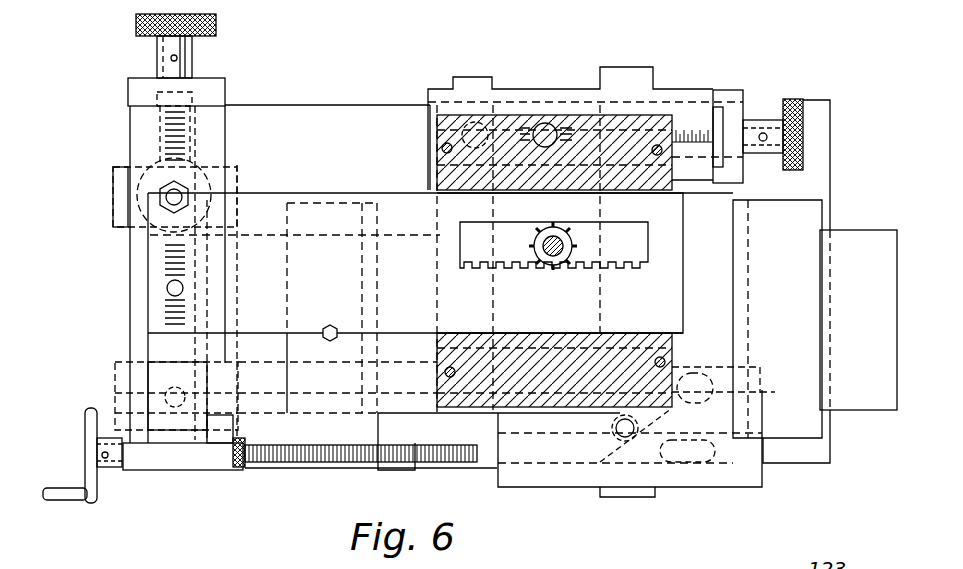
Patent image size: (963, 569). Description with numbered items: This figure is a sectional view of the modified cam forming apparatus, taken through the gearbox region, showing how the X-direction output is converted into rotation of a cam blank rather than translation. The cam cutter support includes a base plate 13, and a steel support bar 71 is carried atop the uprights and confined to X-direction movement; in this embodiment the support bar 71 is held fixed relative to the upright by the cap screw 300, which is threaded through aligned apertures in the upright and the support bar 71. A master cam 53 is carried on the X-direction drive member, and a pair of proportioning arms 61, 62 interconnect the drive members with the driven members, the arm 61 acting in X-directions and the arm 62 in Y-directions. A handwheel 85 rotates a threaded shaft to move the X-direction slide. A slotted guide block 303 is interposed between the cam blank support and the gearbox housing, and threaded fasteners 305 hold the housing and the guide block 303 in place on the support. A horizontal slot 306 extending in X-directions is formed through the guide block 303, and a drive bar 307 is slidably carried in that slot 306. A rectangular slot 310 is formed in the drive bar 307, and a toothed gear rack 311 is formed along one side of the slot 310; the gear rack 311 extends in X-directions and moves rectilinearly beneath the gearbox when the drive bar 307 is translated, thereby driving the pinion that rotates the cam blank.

The base plate 13 is at (820, 158).
The master cam 53 is at (705, 488).
The proportioning arm 61 is at (126, 288).
The proportioning arm 62 is at (705, 84).
The support bar 71 is at (860, 412).
The handwheel 85 is at (100, 493).
The cap screw 300 is at (338, 340).
The slotted guide block 303 is at (668, 186).
The threaded fasteners 305 is at (445, 148).
The horizontal slot 306 is at (454, 196).
The drive bar 307 is at (268, 190).
The rectangular slot 310 is at (460, 243).
The toothed gear rack 311 is at (597, 272).